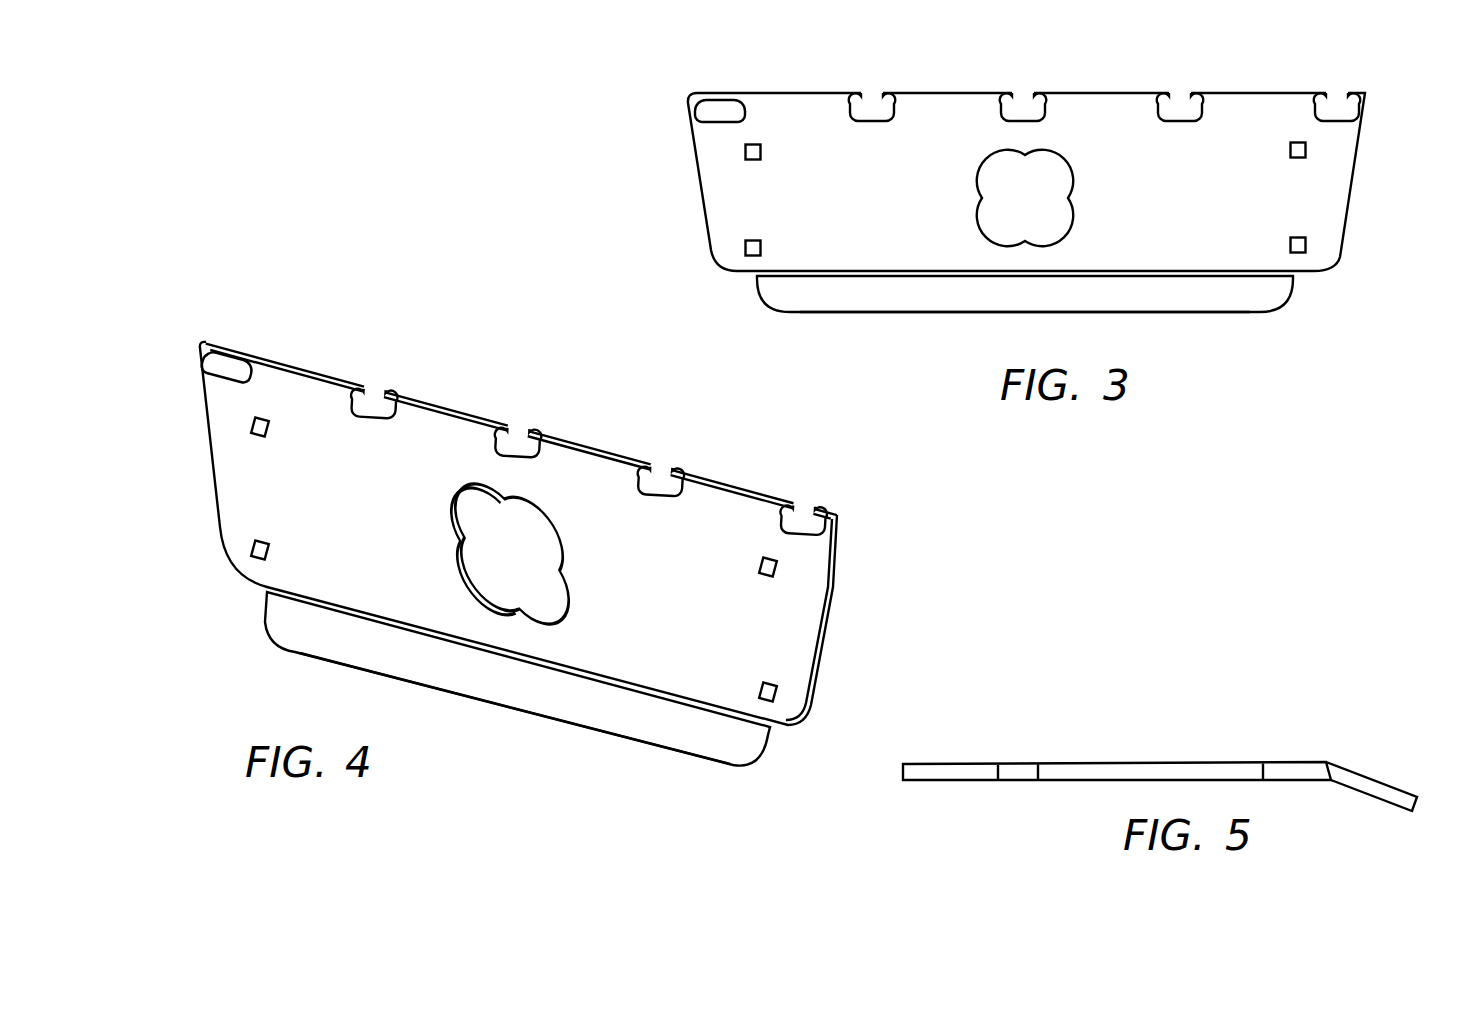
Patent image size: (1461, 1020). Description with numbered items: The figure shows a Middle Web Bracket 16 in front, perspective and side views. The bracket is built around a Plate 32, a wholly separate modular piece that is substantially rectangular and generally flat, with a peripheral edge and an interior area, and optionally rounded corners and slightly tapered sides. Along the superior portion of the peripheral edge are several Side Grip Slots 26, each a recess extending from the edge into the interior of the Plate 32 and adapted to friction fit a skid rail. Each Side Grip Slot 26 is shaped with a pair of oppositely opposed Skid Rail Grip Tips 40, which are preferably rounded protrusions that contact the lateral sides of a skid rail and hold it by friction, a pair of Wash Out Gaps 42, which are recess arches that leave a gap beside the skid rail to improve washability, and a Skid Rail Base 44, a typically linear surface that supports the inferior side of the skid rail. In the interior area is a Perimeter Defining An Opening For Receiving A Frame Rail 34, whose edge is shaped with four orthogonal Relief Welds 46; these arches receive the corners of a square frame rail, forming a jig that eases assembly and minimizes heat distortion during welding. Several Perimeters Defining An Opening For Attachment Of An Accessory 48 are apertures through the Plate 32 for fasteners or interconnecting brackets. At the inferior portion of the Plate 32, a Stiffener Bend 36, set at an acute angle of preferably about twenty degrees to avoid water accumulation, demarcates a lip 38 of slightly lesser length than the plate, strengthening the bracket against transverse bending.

In FIG. 3, the Middle Web Bracket 16 is at (1352, 200).
In FIG. 4, the Middle Web Bracket 16 is at (537, 549).
In FIG. 5, the Middle Web Bracket 16 is at (1149, 759).
In FIG. 3, the Side Grip Slot 26 is at (1098, 108).
In FIG. 4, the Side Grip Slot 26 is at (583, 460).
In FIG. 4, the Plate 32 is at (424, 433).
In FIG. 5, the Plate 32 is at (917, 782).
In FIG. 3, the Perimeter Defining An Opening For Receiving A Frame Rail 34 is at (1045, 262).
In FIG. 4, the Perimeter Defining An Opening For Receiving A Frame Rail 34 is at (530, 620).
In FIG. 3, the Stiffener Bend 36 is at (1293, 277).
In FIG. 4, the Stiffener Bend 36 is at (770, 727).
In FIG. 5, the Stiffener Bend 36 is at (1333, 762).
In FIG. 3, the lip 38 is at (1192, 298).
In FIG. 4, the lip 38 is at (727, 743).
In FIG. 3, the Skid Rail Grip Tip 40 is at (677, 89).
In FIG. 4, the Skid Rail Grip Tip 40 is at (195, 354).
In FIG. 3, the Wash Out Gap 42 is at (745, 122).
In FIG. 4, the Wash Out Gap 42 is at (245, 378).
In FIG. 3, the Skid Rail Base 44 is at (871, 124).
In FIG. 4, the Skid Rail Base 44 is at (372, 422).
In FIG. 3, the Relief Welds 46 is at (1068, 198).
In FIG. 4, the Relief Welds 46 is at (562, 570).
In FIG. 3, the Perimeter Defining An Opening For Attachment Of An Accessory 48 is at (745, 250).
In FIG. 4, the Perimeter Defining An Opening For Attachment Of An Accessory 48 is at (253, 550).